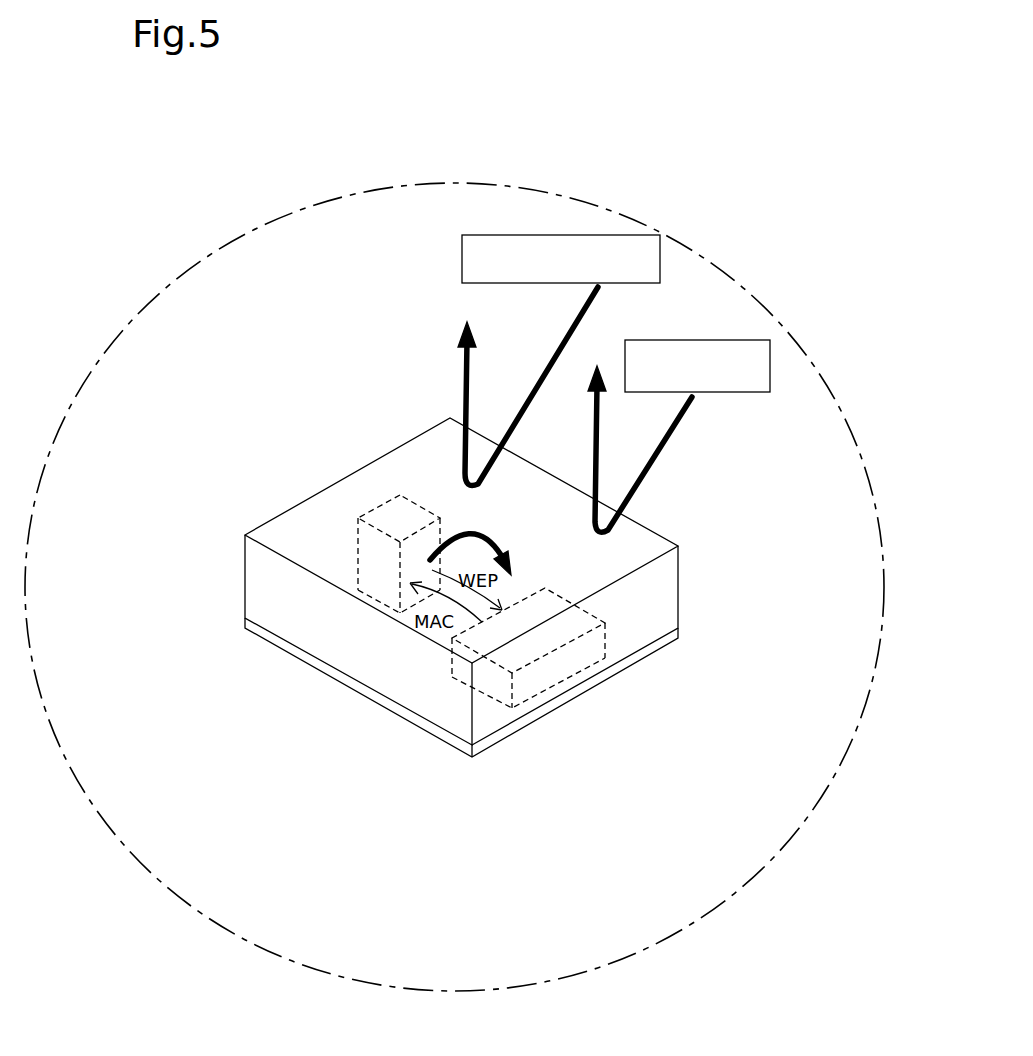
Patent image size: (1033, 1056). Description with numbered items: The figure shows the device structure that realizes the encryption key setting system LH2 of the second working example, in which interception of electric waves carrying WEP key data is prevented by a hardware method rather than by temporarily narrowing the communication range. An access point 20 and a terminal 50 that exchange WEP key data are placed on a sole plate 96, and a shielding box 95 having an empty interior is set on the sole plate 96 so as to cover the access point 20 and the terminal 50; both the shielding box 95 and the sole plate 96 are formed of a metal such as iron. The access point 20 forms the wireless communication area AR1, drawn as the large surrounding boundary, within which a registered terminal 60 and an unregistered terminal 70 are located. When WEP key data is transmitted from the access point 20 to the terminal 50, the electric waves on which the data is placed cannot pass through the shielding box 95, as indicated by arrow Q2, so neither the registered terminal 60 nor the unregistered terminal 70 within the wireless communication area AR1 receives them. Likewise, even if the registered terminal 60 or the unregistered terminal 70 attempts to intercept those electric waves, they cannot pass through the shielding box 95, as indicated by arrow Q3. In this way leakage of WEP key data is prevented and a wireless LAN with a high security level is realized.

The access point 20 is at (374, 498).
The terminal 50 is at (593, 677).
The registered terminal 60 is at (727, 393).
The unregistered terminal 70 is at (645, 284).
The shielding box 95 is at (260, 580).
The sole plate 96 is at (283, 648).
The arrow Q2 is at (508, 533).
The arrow Q3 is at (595, 428).
The encryption key setting system LH2 is at (616, 183).
The wireless communication area AR1 is at (690, 247).